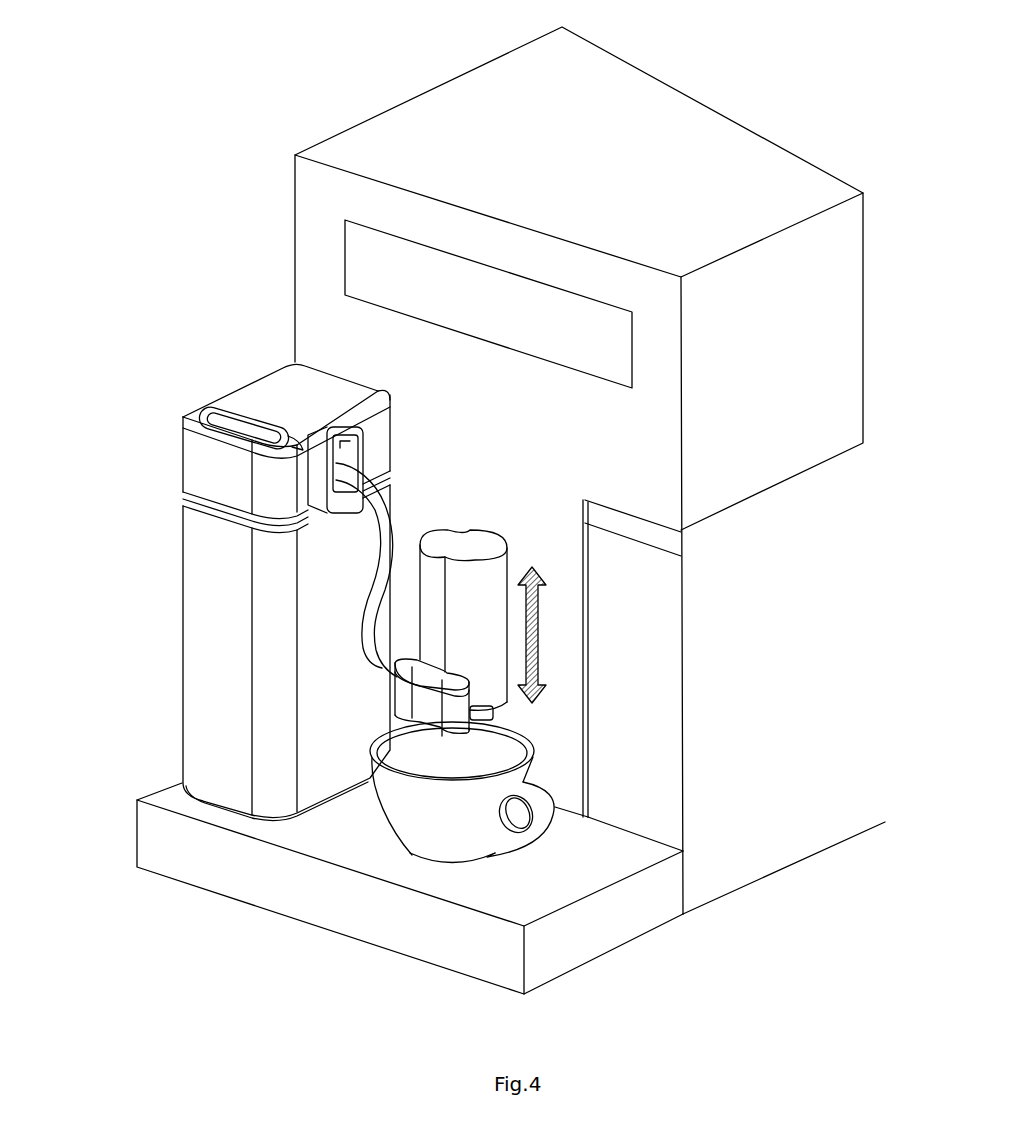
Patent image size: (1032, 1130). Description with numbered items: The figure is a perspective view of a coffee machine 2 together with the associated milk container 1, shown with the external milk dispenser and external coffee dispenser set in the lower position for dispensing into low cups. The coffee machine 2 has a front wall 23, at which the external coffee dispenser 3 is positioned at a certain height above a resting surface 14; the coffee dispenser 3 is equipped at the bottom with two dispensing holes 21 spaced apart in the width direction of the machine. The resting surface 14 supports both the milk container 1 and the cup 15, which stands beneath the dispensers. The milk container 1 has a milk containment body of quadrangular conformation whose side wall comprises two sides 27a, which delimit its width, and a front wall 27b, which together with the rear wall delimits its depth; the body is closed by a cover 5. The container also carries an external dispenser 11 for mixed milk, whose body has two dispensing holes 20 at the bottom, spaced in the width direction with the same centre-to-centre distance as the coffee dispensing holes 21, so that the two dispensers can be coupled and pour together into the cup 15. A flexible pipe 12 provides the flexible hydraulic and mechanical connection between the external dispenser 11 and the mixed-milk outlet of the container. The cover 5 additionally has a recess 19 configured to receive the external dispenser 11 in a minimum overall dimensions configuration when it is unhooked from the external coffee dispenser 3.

The milk container 1 is at (163, 653).
The coffee machine 2 is at (358, 95).
The external coffee dispenser 3 is at (483, 545).
The cover 5 is at (253, 368).
The external dispenser for mixed milk 11 is at (470, 703).
The flexible pipe 12 is at (390, 517).
The resting surface 14 is at (340, 850).
The cup 15 is at (473, 822).
The recess 19 is at (235, 423).
The dispensing holes 20 is at (373, 747).
The dispensing holes 21 is at (481, 722).
The front wall 23 is at (585, 465).
The sides 27a is at (327, 607).
The front wall 27b is at (210, 540).